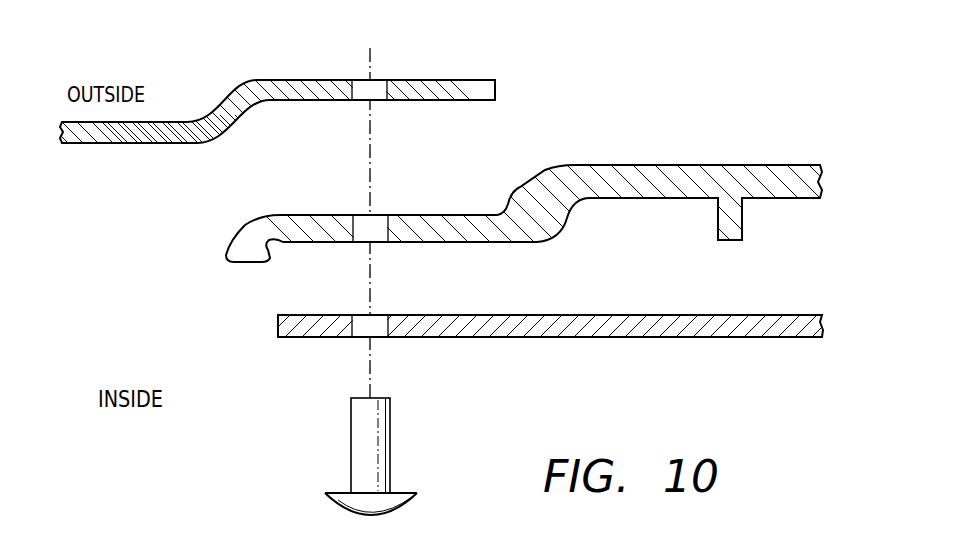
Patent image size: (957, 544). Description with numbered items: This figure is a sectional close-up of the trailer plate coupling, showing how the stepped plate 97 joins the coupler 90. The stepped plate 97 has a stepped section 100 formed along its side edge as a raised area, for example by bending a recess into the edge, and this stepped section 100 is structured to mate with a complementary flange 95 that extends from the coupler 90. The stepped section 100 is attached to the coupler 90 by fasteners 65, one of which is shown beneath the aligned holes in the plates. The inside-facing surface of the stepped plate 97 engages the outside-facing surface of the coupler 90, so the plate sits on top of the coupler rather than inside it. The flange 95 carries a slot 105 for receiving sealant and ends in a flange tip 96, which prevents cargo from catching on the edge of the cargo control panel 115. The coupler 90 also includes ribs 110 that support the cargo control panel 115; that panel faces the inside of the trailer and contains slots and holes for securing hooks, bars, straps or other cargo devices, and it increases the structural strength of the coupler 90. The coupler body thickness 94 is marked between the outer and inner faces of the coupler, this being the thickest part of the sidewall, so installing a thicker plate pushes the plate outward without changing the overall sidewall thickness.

The stepped section 100 is at (494, 72).
The stepped plate 97 is at (98, 134).
The flange 95 is at (330, 220).
The coupler 90 is at (648, 152).
The flange tip 96 is at (243, 263).
The slot 105 is at (495, 205).
The ribs 110 is at (718, 222).
The coupler body thickness 94 is at (730, 118).
The cargo control panel 115 is at (312, 346).
The fasteners 65 is at (340, 503).